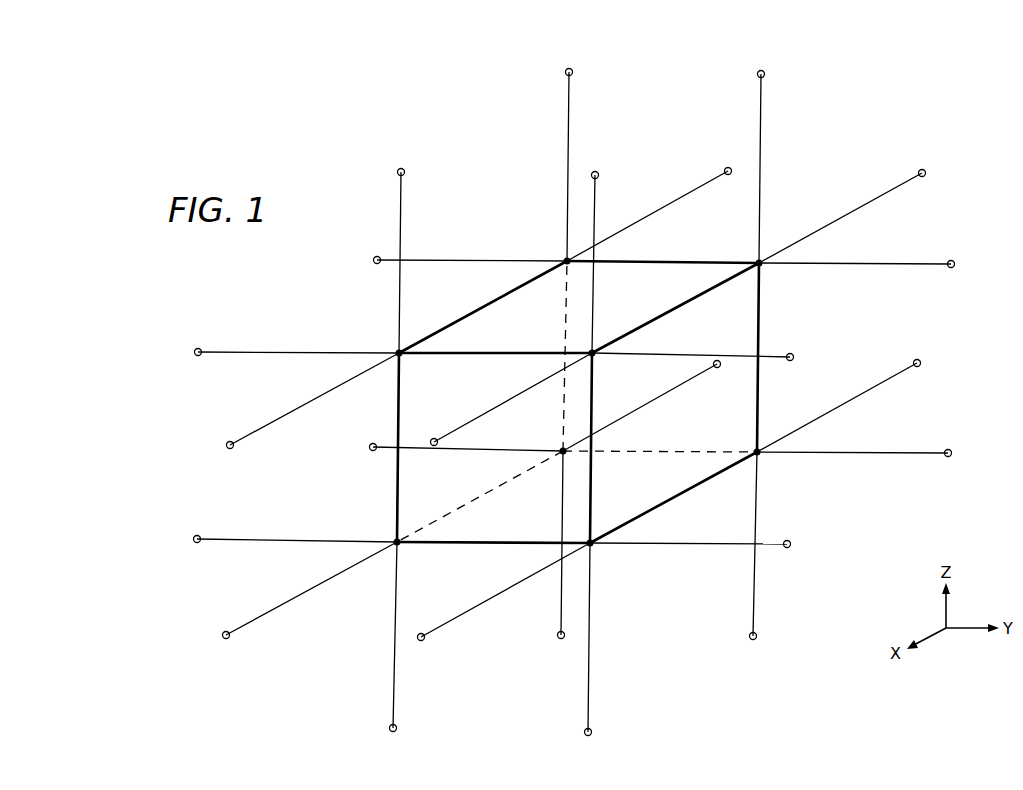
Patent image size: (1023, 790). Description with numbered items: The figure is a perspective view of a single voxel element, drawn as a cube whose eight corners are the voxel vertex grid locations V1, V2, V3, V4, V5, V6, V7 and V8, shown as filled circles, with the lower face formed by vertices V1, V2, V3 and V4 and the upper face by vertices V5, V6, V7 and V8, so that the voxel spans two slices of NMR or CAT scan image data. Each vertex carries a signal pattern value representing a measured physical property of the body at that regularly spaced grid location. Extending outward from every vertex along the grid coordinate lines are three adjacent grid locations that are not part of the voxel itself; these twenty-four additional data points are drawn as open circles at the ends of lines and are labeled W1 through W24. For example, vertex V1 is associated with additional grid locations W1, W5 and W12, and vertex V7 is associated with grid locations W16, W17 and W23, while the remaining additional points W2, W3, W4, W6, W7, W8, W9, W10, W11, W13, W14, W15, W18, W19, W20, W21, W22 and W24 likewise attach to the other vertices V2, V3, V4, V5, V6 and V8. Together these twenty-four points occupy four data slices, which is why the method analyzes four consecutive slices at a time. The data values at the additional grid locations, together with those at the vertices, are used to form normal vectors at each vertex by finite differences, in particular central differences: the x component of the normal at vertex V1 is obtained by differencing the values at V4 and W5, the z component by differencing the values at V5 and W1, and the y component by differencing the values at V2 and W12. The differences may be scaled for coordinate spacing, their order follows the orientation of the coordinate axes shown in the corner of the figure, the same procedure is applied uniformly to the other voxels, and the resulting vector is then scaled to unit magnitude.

The voxel vertex V1 is at (409, 552).
The voxel vertex V2 is at (603, 553).
The voxel vertex V3 is at (770, 462).
The voxel vertex V4 is at (575, 461).
The voxel vertex V5 is at (411, 363).
The voxel vertex V6 is at (605, 363).
The voxel vertex V7 is at (772, 273).
The voxel vertex V8 is at (577, 273).
The additional grid location W1 is at (395, 651).
The additional grid location W2 is at (590, 652).
The additional grid location W3 is at (752, 559).
The additional grid location W4 is at (560, 558).
The additional grid location W5 is at (303, 604).
The additional grid location W6 is at (496, 604).
The additional grid location W7 is at (708, 544).
The additional grid location W8 is at (872, 453).
The additional grid location W9 is at (856, 402).
The additional grid location W10 is at (654, 406).
The additional grid location W11 is at (443, 447).
The additional grid location W12 is at (272, 540).
The additional grid location W13 is at (290, 405).
The additional grid location W14 is at (499, 399).
The additional grid location W15 is at (716, 357).
The additional grid location W16 is at (881, 264).
The additional grid location W17 is at (849, 204).
The additional grid location W18 is at (656, 202).
The additional grid location W19 is at (447, 261).
The additional grid location W20 is at (274, 353).
The additional grid location W21 is at (401, 249).
The additional grid location W22 is at (595, 250).
The additional grid location W23 is at (761, 154).
The additional grid location W24 is at (569, 152).